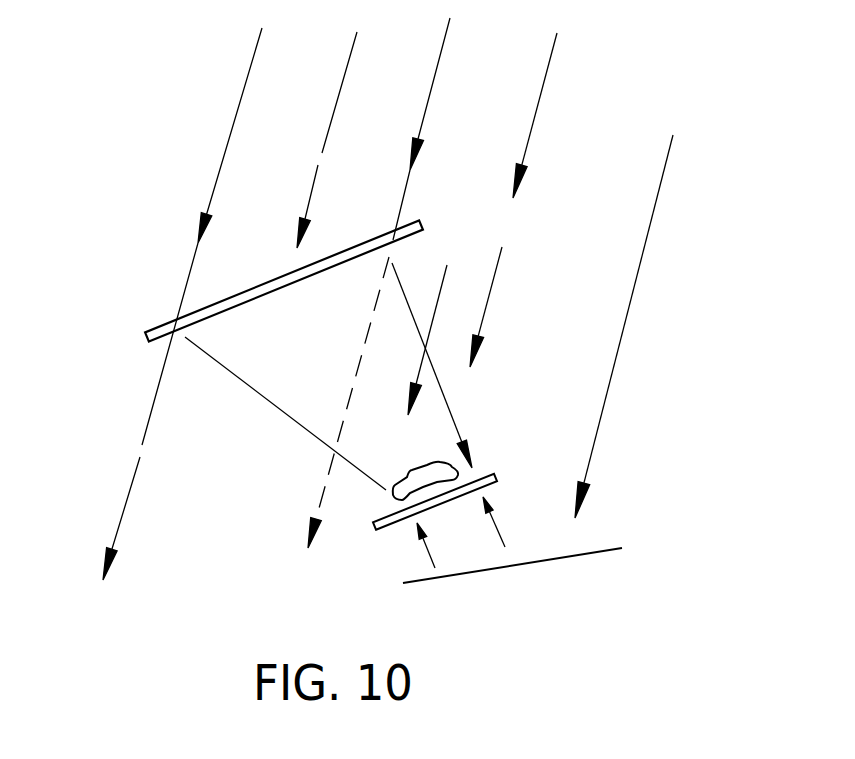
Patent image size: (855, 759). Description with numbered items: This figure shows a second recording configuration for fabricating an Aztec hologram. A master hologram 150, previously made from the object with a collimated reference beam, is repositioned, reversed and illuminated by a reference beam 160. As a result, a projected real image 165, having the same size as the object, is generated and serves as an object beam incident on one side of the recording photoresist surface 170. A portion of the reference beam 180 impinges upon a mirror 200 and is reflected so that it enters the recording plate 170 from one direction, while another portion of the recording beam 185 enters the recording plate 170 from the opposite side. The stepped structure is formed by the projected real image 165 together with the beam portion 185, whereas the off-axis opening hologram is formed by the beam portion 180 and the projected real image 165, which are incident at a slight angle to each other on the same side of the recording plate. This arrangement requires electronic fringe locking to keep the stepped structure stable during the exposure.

The master hologram 150 is at (263, 284).
The reference beam 160 is at (229, 142).
The projected real image 165 is at (425, 478).
The recording photoresist surface 170 is at (497, 475).
The reference beam 180 is at (620, 347).
The recording beam 185 is at (495, 272).
The mirror 200 is at (595, 556).